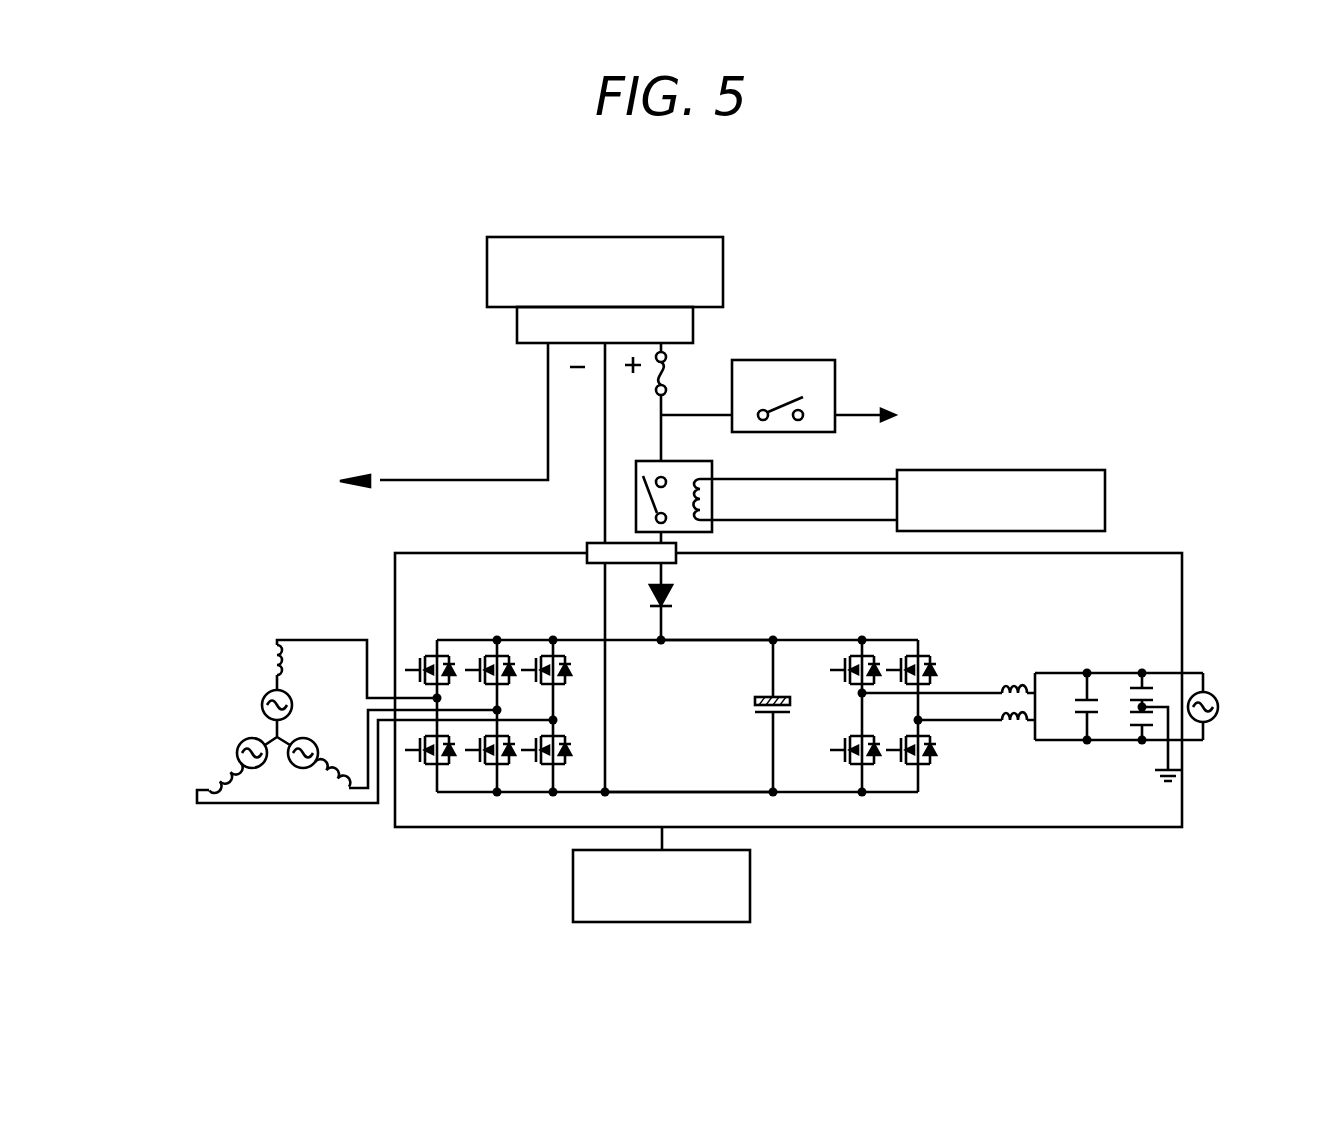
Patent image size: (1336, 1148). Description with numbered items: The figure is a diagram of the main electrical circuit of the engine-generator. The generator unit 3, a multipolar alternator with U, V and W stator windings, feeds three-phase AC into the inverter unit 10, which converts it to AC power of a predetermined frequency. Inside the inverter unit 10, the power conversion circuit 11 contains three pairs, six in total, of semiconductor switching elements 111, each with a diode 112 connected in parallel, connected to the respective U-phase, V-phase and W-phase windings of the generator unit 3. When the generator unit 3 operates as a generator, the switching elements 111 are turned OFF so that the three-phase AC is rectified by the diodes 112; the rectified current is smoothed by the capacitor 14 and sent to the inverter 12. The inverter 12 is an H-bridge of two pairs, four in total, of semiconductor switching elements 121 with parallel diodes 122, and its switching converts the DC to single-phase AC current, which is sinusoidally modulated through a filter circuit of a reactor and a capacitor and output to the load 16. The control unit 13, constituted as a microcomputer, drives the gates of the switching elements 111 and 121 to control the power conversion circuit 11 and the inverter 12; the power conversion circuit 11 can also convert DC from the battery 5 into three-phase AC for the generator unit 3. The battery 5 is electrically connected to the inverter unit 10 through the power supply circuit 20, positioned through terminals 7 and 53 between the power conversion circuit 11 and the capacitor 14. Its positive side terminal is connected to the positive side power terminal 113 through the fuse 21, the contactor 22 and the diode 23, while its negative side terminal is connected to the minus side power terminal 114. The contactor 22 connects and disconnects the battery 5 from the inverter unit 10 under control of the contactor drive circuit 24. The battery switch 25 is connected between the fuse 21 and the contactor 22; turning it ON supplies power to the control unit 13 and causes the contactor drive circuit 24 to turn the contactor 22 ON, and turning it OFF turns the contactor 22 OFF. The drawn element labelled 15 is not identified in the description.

The generator unit 3 is at (243, 703).
The battery 5 is at (723, 258).
The terminal 7 is at (536, 325).
The terminal 53 is at (517, 327).
The inverter unit 10 is at (1043, 828).
The power conversion circuit 11 is at (661, 759).
The semiconductor switching element 111 is at (432, 762).
The diode 112 is at (452, 760).
The positive side power terminal 113 is at (661, 645).
The minus side power terminal 114 is at (608, 790).
The inverter 12 is at (902, 762).
The semiconductor switching element 121 is at (853, 762).
The diode 122 is at (873, 760).
The control unit 13 is at (752, 870).
The capacitor 14 is at (762, 713).
The filter circuit 15 is at (1120, 815).
The load 16 is at (1218, 700).
The power supply circuit 20 is at (579, 429).
The fuse 21 is at (665, 371).
The contactor 22 is at (636, 495).
The diode 23 is at (674, 596).
The contactor drive circuit 24 is at (1108, 490).
The battery switch 25 is at (822, 360).